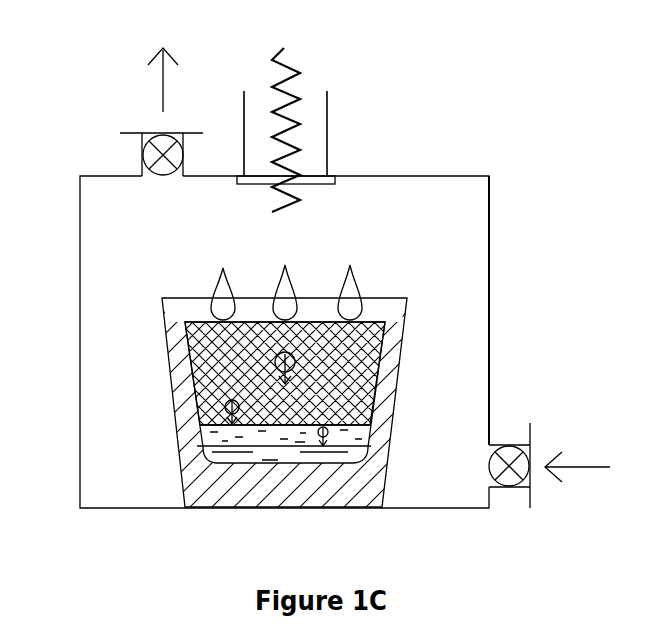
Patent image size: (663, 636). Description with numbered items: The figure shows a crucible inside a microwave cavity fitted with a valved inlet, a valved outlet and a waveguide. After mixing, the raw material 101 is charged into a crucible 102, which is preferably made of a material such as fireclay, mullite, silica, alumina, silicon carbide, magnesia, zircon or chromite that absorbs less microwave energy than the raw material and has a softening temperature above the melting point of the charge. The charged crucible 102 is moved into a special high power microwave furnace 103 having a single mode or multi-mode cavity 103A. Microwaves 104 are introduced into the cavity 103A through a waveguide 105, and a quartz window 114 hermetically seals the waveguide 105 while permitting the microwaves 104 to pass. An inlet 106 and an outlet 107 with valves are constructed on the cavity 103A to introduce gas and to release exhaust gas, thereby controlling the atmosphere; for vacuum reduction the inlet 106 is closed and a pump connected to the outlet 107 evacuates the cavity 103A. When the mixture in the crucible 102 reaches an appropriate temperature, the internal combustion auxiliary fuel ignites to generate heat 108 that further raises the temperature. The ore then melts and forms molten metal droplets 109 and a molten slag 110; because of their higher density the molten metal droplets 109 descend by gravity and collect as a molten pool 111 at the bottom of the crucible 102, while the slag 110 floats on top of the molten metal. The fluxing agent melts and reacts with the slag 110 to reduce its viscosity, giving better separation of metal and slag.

The raw material 101 is at (213, 360).
The crucible 102 is at (188, 425).
The high power microwave furnace 103 is at (417, 176).
The cavity 103A is at (453, 290).
The microwaves 104 is at (292, 96).
The waveguide 105 is at (328, 137).
The inlet 106 is at (508, 445).
The outlet 107 is at (142, 155).
The heat 108 is at (283, 277).
The molten metal droplets 109 is at (287, 358).
The molten slag 110 is at (355, 432).
The molten pool 111 is at (350, 452).
The quartz window 114 is at (240, 185).